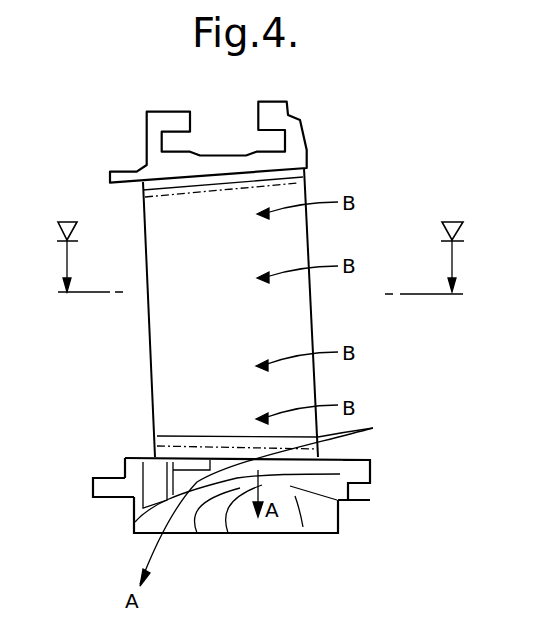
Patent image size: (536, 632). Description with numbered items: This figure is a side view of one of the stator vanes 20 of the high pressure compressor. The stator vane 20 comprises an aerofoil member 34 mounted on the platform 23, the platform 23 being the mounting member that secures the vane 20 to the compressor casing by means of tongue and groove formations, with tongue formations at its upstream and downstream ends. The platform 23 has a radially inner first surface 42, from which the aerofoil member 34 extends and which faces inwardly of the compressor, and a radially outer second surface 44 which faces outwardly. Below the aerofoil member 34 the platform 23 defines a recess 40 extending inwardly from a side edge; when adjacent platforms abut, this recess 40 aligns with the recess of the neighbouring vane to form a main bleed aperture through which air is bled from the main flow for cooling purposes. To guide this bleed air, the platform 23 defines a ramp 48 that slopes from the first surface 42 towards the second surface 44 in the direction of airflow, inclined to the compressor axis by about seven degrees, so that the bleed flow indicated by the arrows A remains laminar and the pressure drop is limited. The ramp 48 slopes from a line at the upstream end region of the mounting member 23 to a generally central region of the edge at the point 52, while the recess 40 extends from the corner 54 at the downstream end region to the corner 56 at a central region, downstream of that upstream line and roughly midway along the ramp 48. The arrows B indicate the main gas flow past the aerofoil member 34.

The stator vane 20 is at (122, 345).
The platform 23 is at (371, 500).
The aerofoil member 34 is at (296, 302).
The recess 40 is at (150, 497).
The first surface 42 is at (350, 461).
The second surface 44 is at (201, 534).
The ramp 48 is at (230, 534).
The point 52 is at (135, 457).
The corner 54 is at (137, 479).
The corner 56 is at (303, 527).